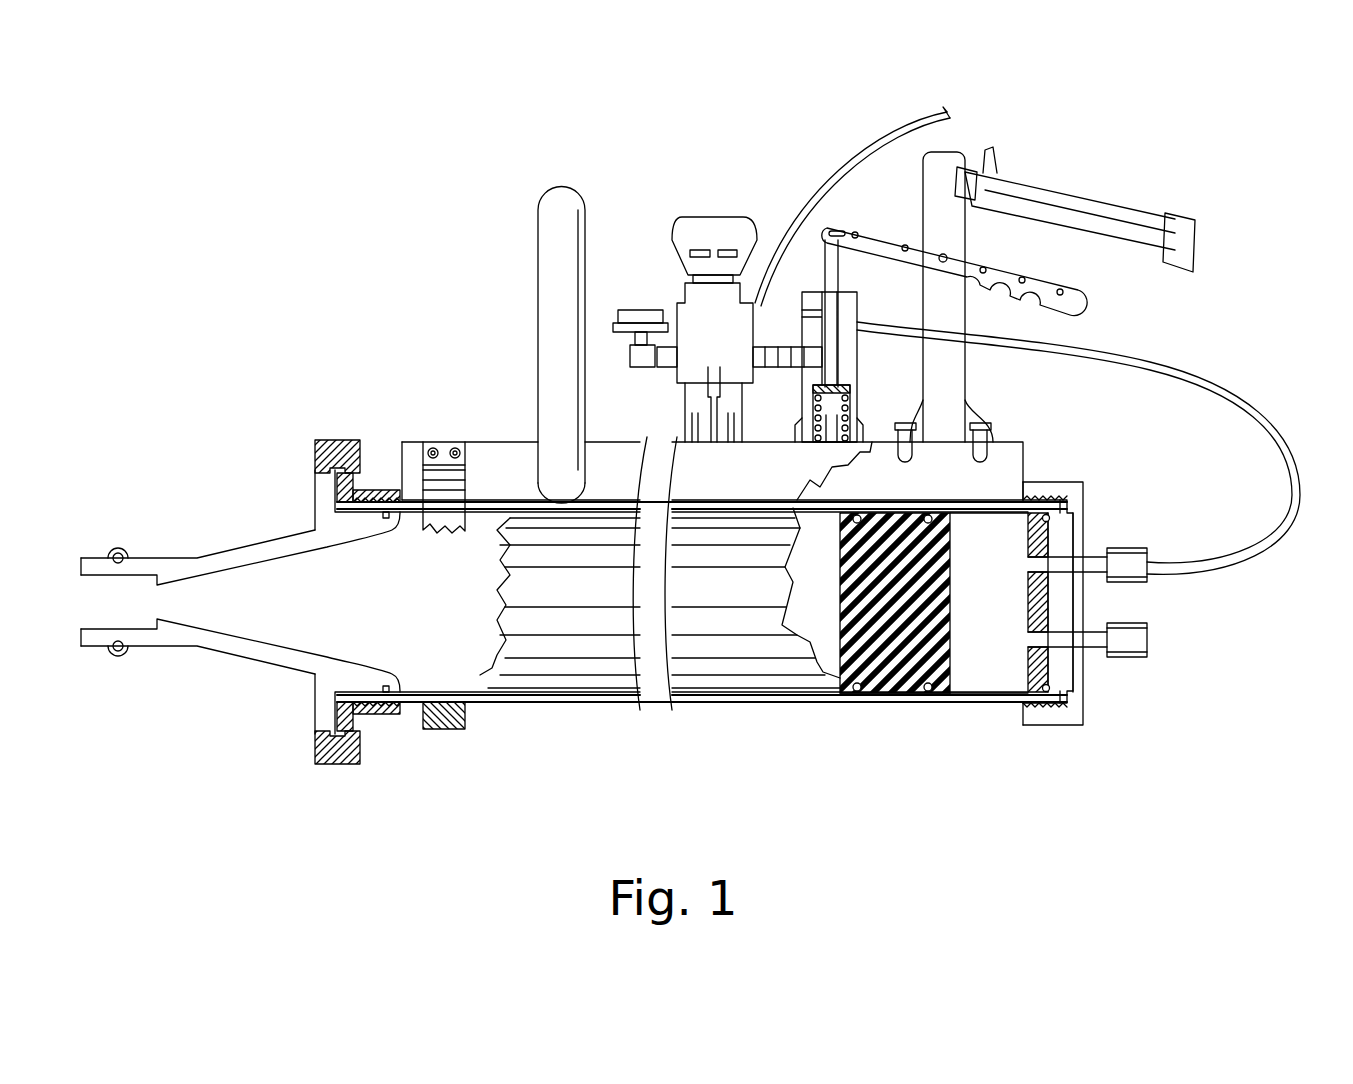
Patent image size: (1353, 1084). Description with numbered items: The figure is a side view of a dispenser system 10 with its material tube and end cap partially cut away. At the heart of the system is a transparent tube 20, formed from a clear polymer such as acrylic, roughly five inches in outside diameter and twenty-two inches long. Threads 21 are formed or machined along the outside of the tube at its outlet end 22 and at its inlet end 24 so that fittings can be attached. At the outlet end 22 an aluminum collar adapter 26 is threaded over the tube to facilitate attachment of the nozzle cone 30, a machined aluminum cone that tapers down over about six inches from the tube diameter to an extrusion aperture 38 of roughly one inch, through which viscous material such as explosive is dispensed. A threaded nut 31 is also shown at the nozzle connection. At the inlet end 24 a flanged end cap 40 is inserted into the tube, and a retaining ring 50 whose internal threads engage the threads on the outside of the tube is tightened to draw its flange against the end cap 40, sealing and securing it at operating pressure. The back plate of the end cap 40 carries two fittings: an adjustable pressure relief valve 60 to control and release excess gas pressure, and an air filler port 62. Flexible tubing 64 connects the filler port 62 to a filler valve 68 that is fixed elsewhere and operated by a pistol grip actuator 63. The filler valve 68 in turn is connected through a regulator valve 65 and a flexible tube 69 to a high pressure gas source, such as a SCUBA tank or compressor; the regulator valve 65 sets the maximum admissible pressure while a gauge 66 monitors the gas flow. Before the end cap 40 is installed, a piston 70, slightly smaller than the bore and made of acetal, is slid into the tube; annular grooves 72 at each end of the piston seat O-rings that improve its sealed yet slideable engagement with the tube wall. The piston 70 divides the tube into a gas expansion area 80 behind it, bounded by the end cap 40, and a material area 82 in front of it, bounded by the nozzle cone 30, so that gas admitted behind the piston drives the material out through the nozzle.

The dispenser system 10 is at (330, 340).
The transparent tube 20 is at (902, 695).
The threads 21 is at (380, 713).
The outlet end 22 is at (465, 668).
The inlet end 24 is at (1015, 682).
The collar adapter 26 is at (368, 490).
The nozzle cone 30 is at (318, 683).
The upper threaded nut 31 is at (335, 440).
The extrusion aperture 38 is at (127, 614).
The flanged end cap 40 is at (1062, 592).
The retaining ring 50 is at (1083, 495).
The adjustable pressure relief valve 60 is at (1125, 652).
The air filler port 62 is at (1085, 565).
The pistol grip actuator 63 is at (1125, 243).
The flexible tubing 64 is at (1233, 405).
The regulator valve 65 is at (693, 218).
The gauge 66 is at (640, 310).
The filler valve 68 is at (818, 297).
The flexible tube 69 is at (830, 157).
The piston 70 is at (887, 687).
The annular grooves 72 is at (928, 687).
The gas expansion area 80 is at (973, 621).
The material area 82 is at (798, 621).